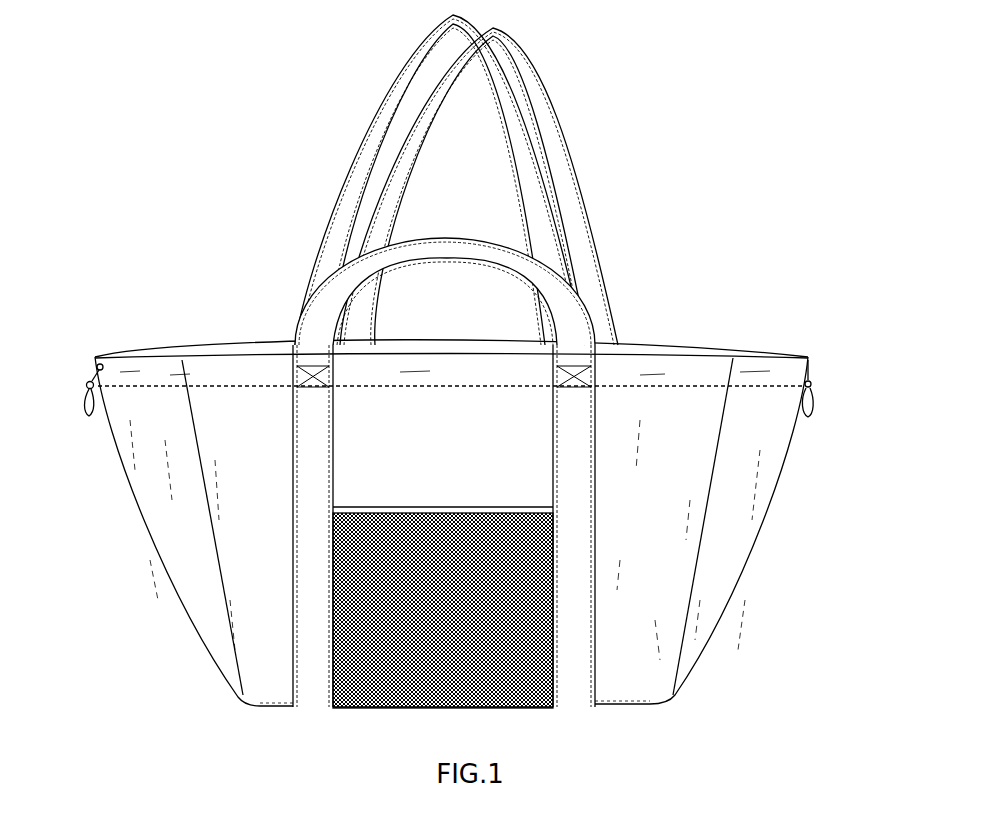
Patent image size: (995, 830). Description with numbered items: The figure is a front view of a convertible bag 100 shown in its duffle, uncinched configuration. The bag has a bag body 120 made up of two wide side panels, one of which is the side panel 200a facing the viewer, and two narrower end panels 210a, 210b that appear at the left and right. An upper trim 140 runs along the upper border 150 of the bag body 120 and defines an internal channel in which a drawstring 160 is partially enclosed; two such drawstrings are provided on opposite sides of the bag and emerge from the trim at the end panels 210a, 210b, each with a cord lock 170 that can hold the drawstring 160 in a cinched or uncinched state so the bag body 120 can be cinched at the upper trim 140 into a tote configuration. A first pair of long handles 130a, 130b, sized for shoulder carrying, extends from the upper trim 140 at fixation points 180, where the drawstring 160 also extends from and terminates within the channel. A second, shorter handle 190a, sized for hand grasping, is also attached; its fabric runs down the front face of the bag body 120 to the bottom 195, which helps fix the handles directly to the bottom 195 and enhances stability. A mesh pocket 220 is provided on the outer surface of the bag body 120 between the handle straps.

The convertible bag 100 is at (770, 247).
The bag body 120 is at (143, 555).
The first handle 130a is at (360, 163).
The first handle 130b is at (547, 163).
The upper trim 140 is at (700, 345).
The upper border 150 is at (115, 350).
The drawstring 160 is at (92, 414).
The cord lock 170 is at (86, 384).
The fixation point 180 is at (604, 348).
The second handle 190a is at (310, 328).
The bottom 195 is at (513, 713).
The side panel 200a is at (667, 497).
The end panel 210a is at (193, 618).
The end panel 210b is at (717, 620).
The mesh pocket 220 is at (383, 710).